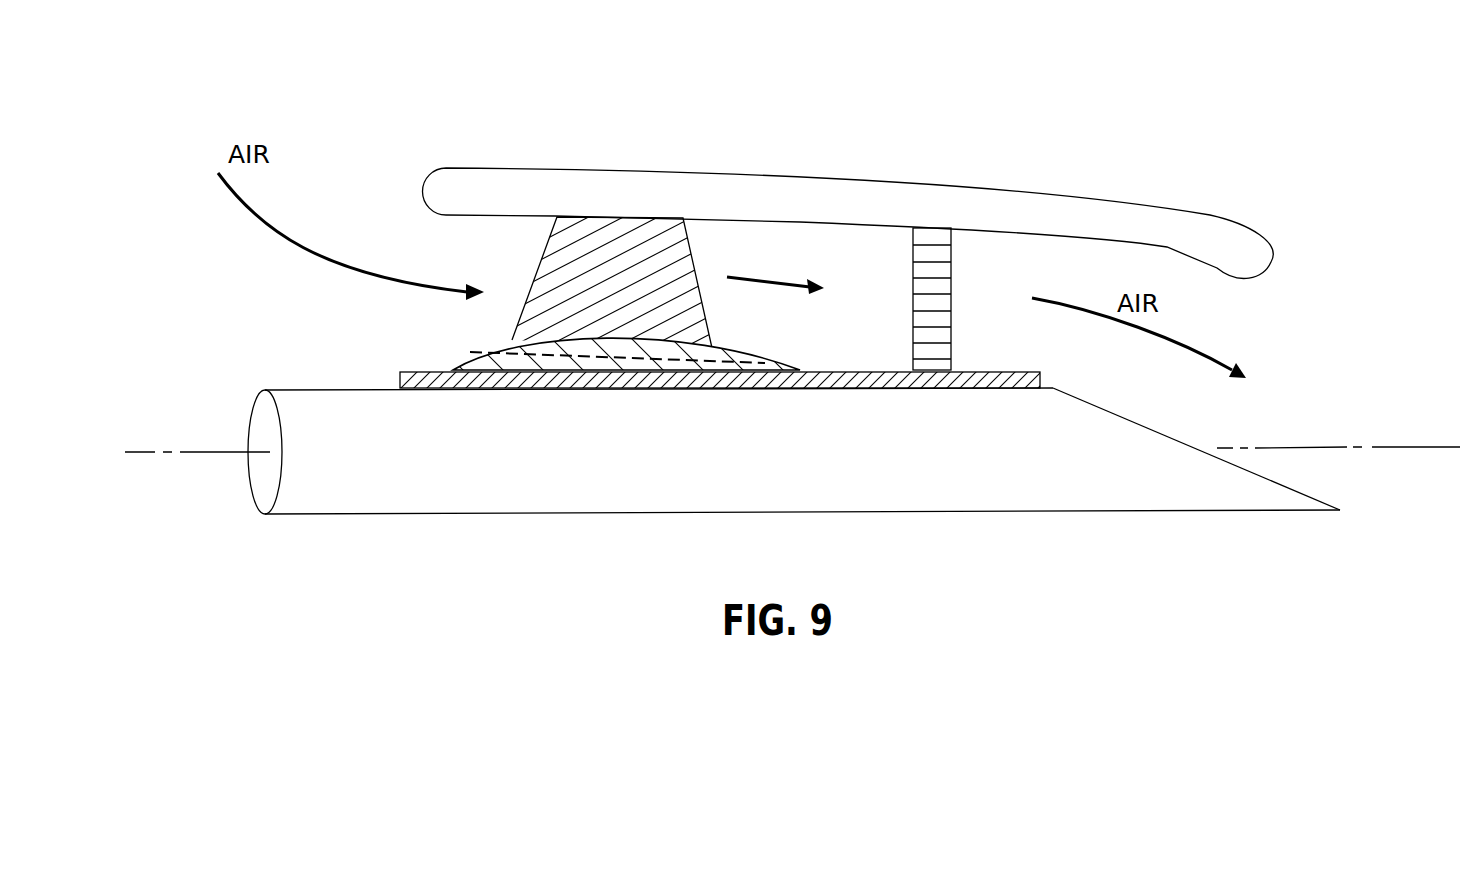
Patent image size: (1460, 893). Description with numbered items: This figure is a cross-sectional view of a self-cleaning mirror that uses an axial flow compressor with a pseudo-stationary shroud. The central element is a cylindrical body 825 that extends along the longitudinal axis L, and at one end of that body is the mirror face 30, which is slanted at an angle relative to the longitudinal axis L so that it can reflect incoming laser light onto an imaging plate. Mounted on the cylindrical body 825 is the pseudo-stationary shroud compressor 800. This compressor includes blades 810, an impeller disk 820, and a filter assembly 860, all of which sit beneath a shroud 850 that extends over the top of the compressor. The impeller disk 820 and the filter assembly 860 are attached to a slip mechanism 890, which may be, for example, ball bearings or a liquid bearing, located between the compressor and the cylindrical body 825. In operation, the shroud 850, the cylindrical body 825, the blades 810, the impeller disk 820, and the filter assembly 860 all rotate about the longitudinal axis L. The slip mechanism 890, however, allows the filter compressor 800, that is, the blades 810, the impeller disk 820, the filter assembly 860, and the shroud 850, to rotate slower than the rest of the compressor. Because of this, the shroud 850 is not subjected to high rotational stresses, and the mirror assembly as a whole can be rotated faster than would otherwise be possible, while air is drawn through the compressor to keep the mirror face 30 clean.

The pseudo-stationary shroud compressor 800 is at (778, 66).
The blades 810 is at (613, 235).
The impeller disk 820 is at (548, 355).
The cylindrical body 825 is at (928, 490).
The shroud 850 is at (883, 193).
The filter assembly 860 is at (951, 268).
The slip mechanism 890 is at (410, 380).
The mirror face 30 is at (1157, 430).
The longitudinal axis L is at (1398, 447).